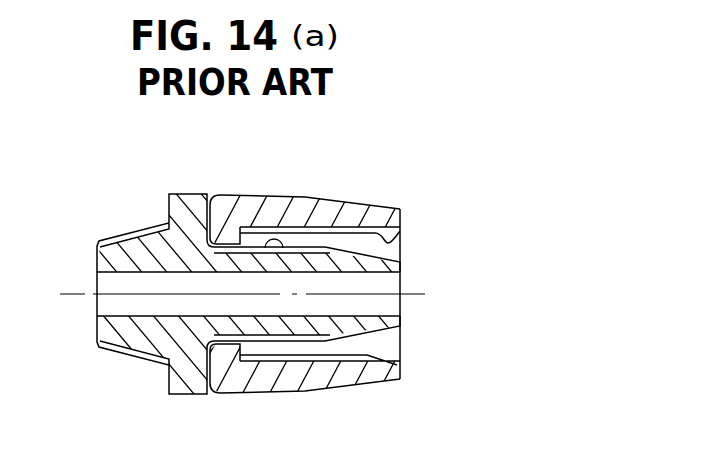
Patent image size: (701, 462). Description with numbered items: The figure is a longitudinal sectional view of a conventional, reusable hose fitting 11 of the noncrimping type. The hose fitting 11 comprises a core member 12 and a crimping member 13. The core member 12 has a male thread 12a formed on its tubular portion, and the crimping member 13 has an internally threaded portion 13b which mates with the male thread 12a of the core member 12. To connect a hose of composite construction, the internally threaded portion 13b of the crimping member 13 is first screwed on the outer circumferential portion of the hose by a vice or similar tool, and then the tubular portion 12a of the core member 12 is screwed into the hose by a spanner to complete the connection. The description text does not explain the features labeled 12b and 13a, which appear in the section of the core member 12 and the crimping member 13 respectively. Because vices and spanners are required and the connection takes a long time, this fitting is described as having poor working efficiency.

The hose fitting 11 is at (387, 177).
The core member 12 is at (169, 209).
The male thread 12a is at (282, 250).
The bore of joint body 12b is at (219, 267).
The crimping member 13 is at (289, 195).
The inward flange of sleeve 13a is at (228, 195).
The internally threaded portion 13b is at (403, 238).